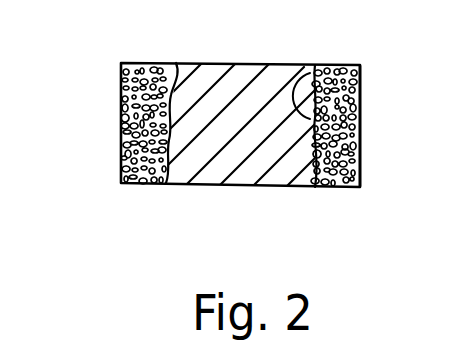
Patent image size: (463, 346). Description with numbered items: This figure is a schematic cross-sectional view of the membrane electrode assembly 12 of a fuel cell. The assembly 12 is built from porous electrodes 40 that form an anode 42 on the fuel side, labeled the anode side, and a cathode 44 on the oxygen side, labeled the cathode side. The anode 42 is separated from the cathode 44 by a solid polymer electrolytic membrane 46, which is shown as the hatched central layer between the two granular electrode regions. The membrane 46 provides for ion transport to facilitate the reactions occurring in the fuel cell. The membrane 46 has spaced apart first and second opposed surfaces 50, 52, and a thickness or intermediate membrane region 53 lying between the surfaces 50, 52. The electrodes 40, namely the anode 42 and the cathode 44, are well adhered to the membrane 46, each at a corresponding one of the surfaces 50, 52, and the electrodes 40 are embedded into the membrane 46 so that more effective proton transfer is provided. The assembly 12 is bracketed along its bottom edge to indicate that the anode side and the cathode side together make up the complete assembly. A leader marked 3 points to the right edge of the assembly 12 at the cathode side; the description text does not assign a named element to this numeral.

The membrane electrode assembly 12 is at (377, 197).
The section view indicator 3 is at (362, 88).
The porous electrodes 40 is at (234, 126).
The anode 42 is at (121, 140).
The cathode 44 is at (362, 158).
The solid polymer electrolytic membrane 46 is at (250, 72).
The first surface 50 is at (199, 67).
The second surface 52 is at (287, 70).
The intermediate membrane region 53 is at (215, 102).